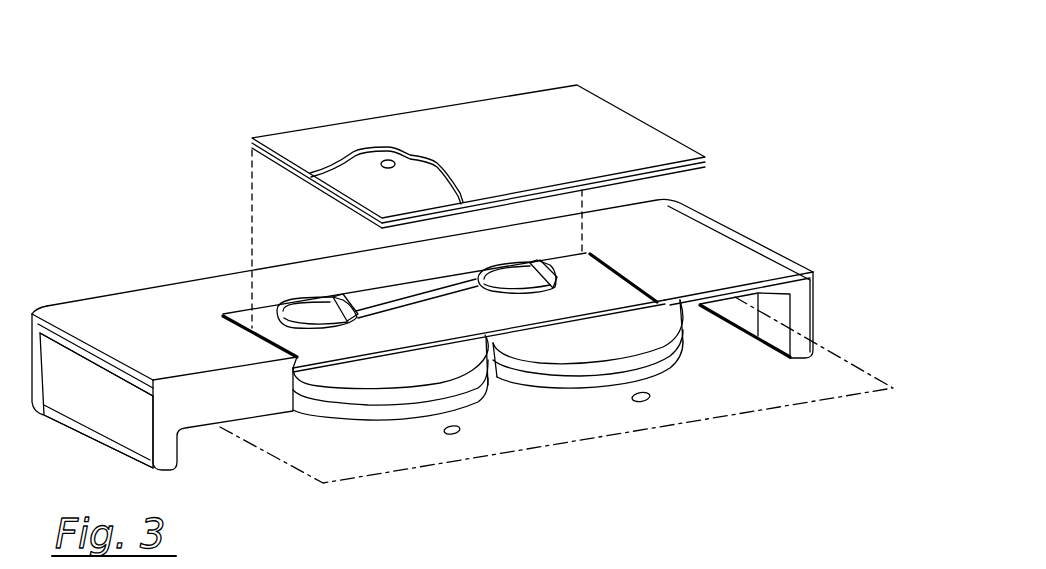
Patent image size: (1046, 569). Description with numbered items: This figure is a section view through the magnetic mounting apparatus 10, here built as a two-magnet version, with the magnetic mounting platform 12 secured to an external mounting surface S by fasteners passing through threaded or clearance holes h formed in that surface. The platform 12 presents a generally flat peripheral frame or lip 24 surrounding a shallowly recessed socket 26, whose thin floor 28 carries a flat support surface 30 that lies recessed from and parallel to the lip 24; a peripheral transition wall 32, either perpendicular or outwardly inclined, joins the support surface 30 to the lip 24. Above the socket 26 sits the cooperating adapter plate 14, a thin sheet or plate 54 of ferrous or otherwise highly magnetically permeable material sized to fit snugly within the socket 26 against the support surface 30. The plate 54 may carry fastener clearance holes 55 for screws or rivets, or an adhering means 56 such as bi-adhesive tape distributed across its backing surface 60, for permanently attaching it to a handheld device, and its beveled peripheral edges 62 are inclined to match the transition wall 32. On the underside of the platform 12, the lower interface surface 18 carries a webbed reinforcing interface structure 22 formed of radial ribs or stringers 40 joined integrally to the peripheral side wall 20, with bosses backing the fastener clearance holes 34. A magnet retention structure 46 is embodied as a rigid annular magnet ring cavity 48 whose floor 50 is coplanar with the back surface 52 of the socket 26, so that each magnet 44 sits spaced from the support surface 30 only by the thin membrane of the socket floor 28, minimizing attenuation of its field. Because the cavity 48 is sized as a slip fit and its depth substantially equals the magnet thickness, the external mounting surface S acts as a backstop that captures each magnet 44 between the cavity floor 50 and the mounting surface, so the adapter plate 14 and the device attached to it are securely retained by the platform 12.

The magnetic mounting apparatus 10 is at (661, 66).
The magnetic mounting platform 12 is at (817, 282).
The adapter plate 14 is at (505, 160).
The lower interface surface 18 is at (357, 449).
The peripheral side wall 20 is at (93, 408).
The webbed reinforcing interface structure 22 is at (224, 470).
The peripheral frame or lip 24 is at (703, 261).
The recessed socket 26 is at (470, 308).
The socket floor 28 is at (423, 334).
The support surface 30 is at (278, 334).
The peripheral transition wall 32 is at (299, 358).
The fastener clearance holes 34 is at (317, 310).
The radial ribs or stringers 40 is at (253, 389).
The magnet 44 is at (397, 415).
The magnet retention structure 46 is at (588, 373).
The magnet ring cavity 48 is at (684, 327).
The cavity floor 50 is at (535, 333).
The back surface 52 is at (758, 337).
The sheet or plate 54 is at (313, 182).
The fastener clearance holes 55 is at (387, 160).
The adhering means 56 is at (321, 136).
The backing surface 60 is at (378, 204).
The beveled peripheral edges 62 is at (707, 162).
The threaded or clearance holes h is at (454, 434).
The external mounting surface S is at (340, 473).